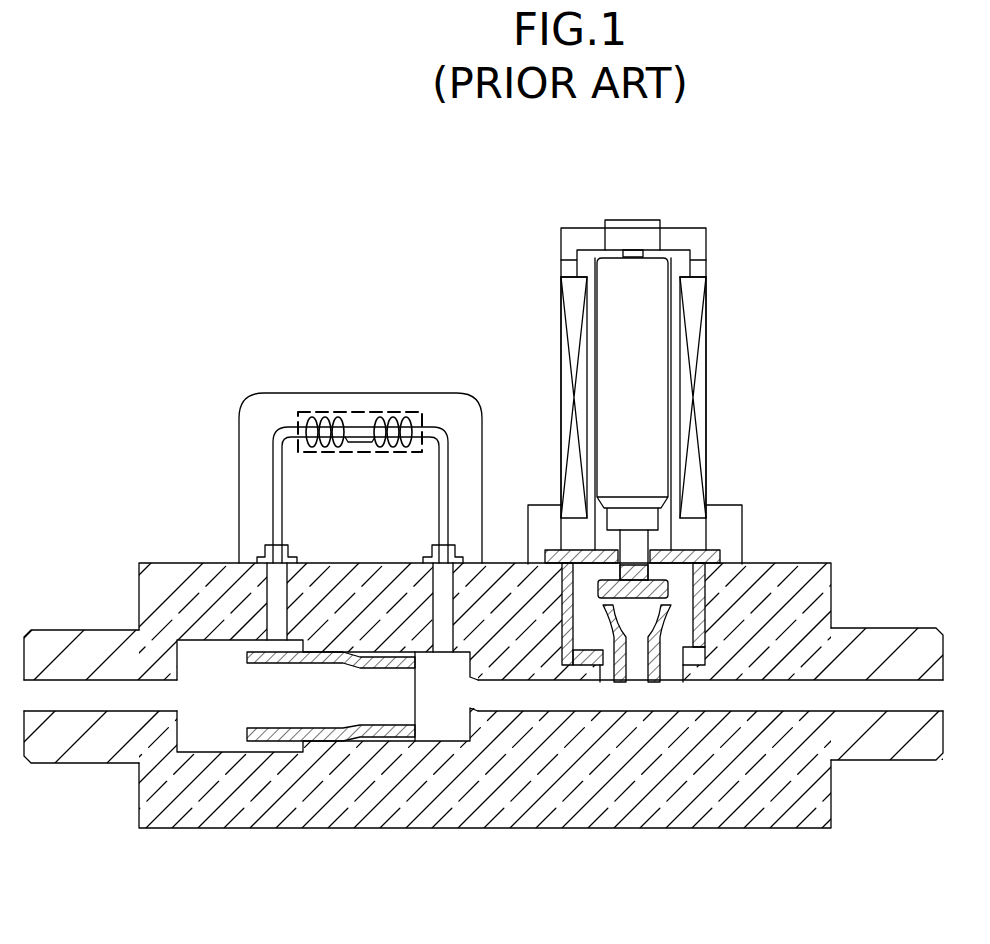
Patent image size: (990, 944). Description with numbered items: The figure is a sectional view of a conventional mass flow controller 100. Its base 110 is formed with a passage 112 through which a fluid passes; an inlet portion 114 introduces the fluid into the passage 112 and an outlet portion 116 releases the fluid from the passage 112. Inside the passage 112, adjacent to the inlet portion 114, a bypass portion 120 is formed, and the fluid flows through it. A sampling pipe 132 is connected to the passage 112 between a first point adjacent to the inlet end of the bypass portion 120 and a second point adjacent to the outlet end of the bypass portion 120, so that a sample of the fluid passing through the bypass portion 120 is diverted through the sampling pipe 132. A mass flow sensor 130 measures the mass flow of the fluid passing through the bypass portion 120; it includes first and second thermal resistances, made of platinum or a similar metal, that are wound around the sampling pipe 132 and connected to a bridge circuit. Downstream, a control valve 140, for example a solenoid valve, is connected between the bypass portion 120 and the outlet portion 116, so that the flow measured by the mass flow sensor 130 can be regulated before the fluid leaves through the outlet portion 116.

The mass flow controller 100 is at (495, 541).
The base 110 is at (830, 568).
The passage 112 is at (550, 705).
The inlet portion 114 is at (95, 760).
The outlet portion 116 is at (875, 752).
The bypass portion 120 is at (323, 745).
The mass flow sensor 130 is at (308, 414).
The sampling pipe 132 is at (277, 495).
The control valve 140 is at (722, 370).